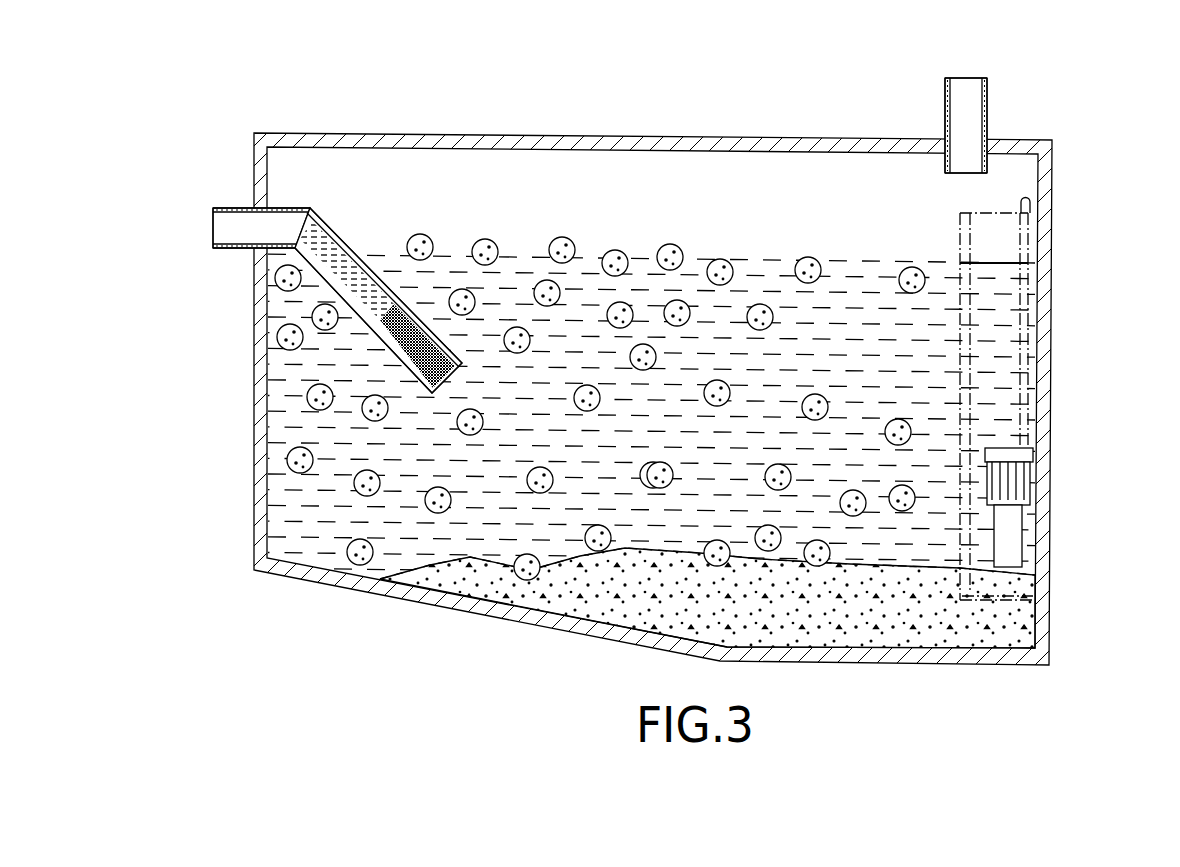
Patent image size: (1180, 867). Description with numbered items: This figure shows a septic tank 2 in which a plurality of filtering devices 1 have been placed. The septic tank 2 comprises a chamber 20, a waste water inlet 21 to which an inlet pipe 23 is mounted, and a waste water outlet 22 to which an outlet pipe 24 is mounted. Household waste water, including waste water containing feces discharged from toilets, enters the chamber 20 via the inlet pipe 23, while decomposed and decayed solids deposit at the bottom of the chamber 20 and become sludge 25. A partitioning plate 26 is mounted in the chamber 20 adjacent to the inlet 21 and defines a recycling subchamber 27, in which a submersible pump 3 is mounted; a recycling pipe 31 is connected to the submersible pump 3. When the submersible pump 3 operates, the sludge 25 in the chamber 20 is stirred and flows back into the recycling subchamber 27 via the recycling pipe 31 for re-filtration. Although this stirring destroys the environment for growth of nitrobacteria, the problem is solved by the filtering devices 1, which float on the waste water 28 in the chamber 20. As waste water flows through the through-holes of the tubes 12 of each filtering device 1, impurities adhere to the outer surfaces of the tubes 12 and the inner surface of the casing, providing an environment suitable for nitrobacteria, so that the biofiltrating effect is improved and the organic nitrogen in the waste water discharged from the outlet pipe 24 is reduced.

The filtering device 1 is at (416, 226).
The septic tank 2 is at (968, 607).
The submersible pump 3 is at (1035, 483).
The tube 12 is at (678, 246).
The chamber 20 is at (583, 180).
The waste water inlet 21 is at (944, 150).
The waste water outlet 22 is at (256, 208).
The inlet pipe 23 is at (988, 150).
The outlet pipe 24 is at (218, 250).
The sludge 25 is at (813, 612).
The partitioning plate 26 is at (975, 263).
The recycling subchamber 27 is at (1010, 214).
The waste water 28 is at (1000, 360).
The recycling pipe 31 is at (1018, 331).